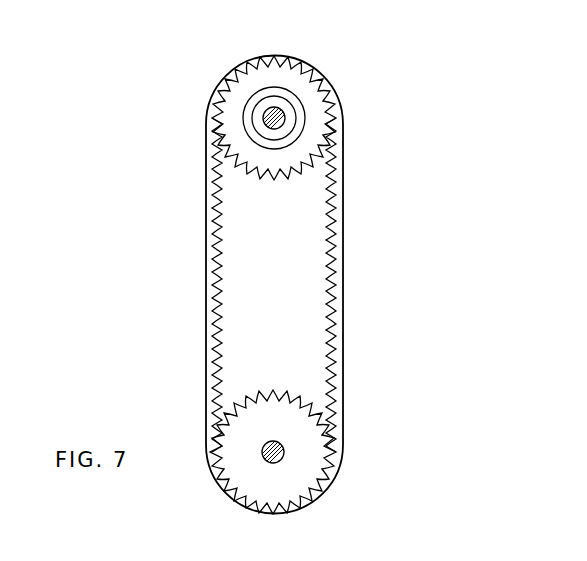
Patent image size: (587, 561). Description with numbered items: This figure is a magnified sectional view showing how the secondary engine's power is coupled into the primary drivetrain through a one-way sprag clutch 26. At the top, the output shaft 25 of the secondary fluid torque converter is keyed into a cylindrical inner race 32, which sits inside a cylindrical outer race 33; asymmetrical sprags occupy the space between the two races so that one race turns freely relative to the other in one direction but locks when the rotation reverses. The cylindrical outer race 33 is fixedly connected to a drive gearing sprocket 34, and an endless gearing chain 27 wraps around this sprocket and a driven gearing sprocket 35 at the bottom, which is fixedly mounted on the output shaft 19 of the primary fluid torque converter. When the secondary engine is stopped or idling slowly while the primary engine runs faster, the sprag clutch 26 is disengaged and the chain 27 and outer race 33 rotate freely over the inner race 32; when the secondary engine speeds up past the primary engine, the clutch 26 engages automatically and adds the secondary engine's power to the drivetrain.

The output shaft 19 is at (280, 460).
The output shaft 25 is at (284, 123).
The sprag clutch 26 is at (192, 125).
The endless gearing chain 27 is at (338, 265).
The cylindrical inner race 32 is at (288, 110).
The cylindrical outer race 33 is at (300, 108).
The drive gearing sprocket 34 is at (253, 82).
The driven gearing sprocket 35 is at (272, 480).